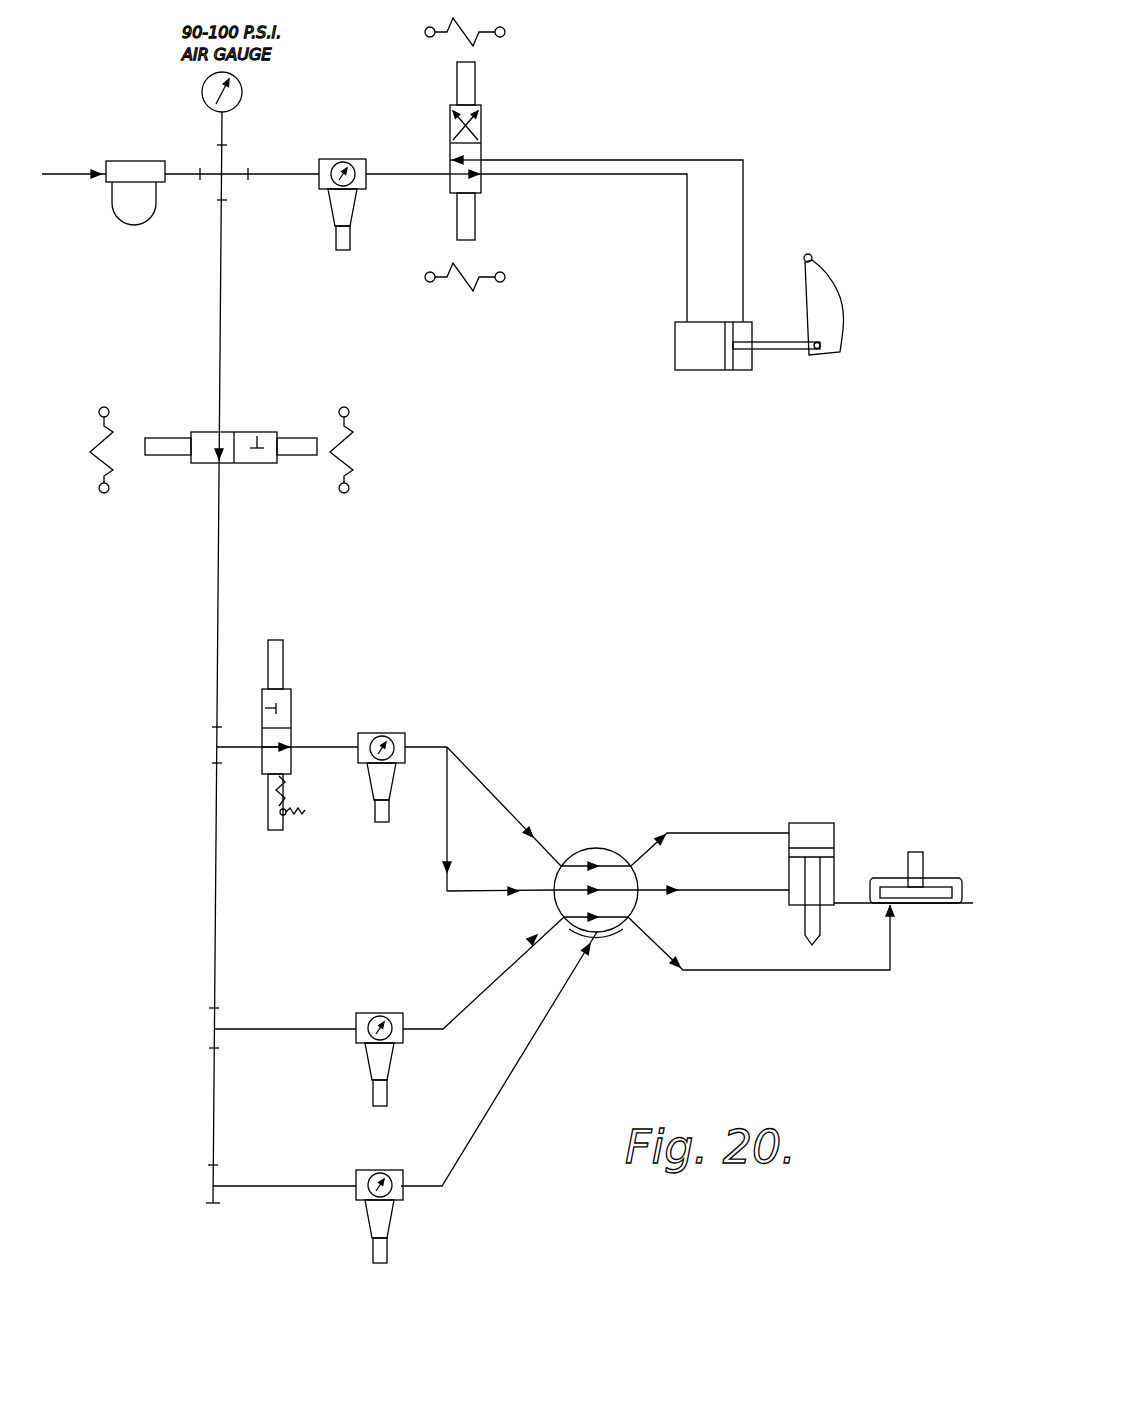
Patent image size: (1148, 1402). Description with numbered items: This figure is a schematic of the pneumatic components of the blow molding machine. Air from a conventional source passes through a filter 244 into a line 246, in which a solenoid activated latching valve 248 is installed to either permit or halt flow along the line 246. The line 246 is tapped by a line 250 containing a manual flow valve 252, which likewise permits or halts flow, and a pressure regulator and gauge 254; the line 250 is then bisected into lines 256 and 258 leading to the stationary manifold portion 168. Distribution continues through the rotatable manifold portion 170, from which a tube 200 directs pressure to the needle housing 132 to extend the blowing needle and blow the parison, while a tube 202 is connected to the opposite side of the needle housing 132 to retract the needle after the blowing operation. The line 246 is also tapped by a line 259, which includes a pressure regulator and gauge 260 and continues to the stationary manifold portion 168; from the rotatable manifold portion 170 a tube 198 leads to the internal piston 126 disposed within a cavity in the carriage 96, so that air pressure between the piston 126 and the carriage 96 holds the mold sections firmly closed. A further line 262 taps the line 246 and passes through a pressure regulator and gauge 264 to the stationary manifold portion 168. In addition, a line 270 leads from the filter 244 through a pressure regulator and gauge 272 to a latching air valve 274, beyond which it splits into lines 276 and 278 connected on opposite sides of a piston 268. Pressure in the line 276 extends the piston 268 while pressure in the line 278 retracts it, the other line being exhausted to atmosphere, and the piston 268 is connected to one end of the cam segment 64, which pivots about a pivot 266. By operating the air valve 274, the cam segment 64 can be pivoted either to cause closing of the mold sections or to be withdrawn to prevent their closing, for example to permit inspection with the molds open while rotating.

The filter 244 is at (132, 211).
The line 246 is at (217, 331).
The solenoid activated latching valve 248 is at (243, 432).
The line 250 is at (318, 745).
The manual flow valve 252 is at (292, 694).
The pressure regulator and gauge 254 is at (400, 732).
The line 256 is at (485, 783).
The line 258 is at (445, 845).
The line 259 is at (293, 1030).
The pressure regulator and gauge 260 is at (387, 1067).
The line 262 is at (295, 1190).
The pressure regulator and gauge 264 is at (388, 1220).
The pivot 266 is at (812, 256).
The piston 268 is at (722, 355).
The line 270 is at (282, 170).
The pressure regulator and gauge 272 is at (348, 163).
The latching air valve 274 is at (450, 143).
The line 276 is at (687, 250).
The line 278 is at (745, 202).
The cam segment 64 is at (828, 302).
The stationary manifold portion 168 is at (596, 857).
The rotatable manifold portion 170 is at (610, 848).
The tube 200 is at (647, 857).
The tube 202 is at (652, 897).
The tube 198 is at (658, 947).
The needle housing 132 is at (833, 830).
The carriage 96 is at (933, 878).
The internal piston 126 is at (927, 900).